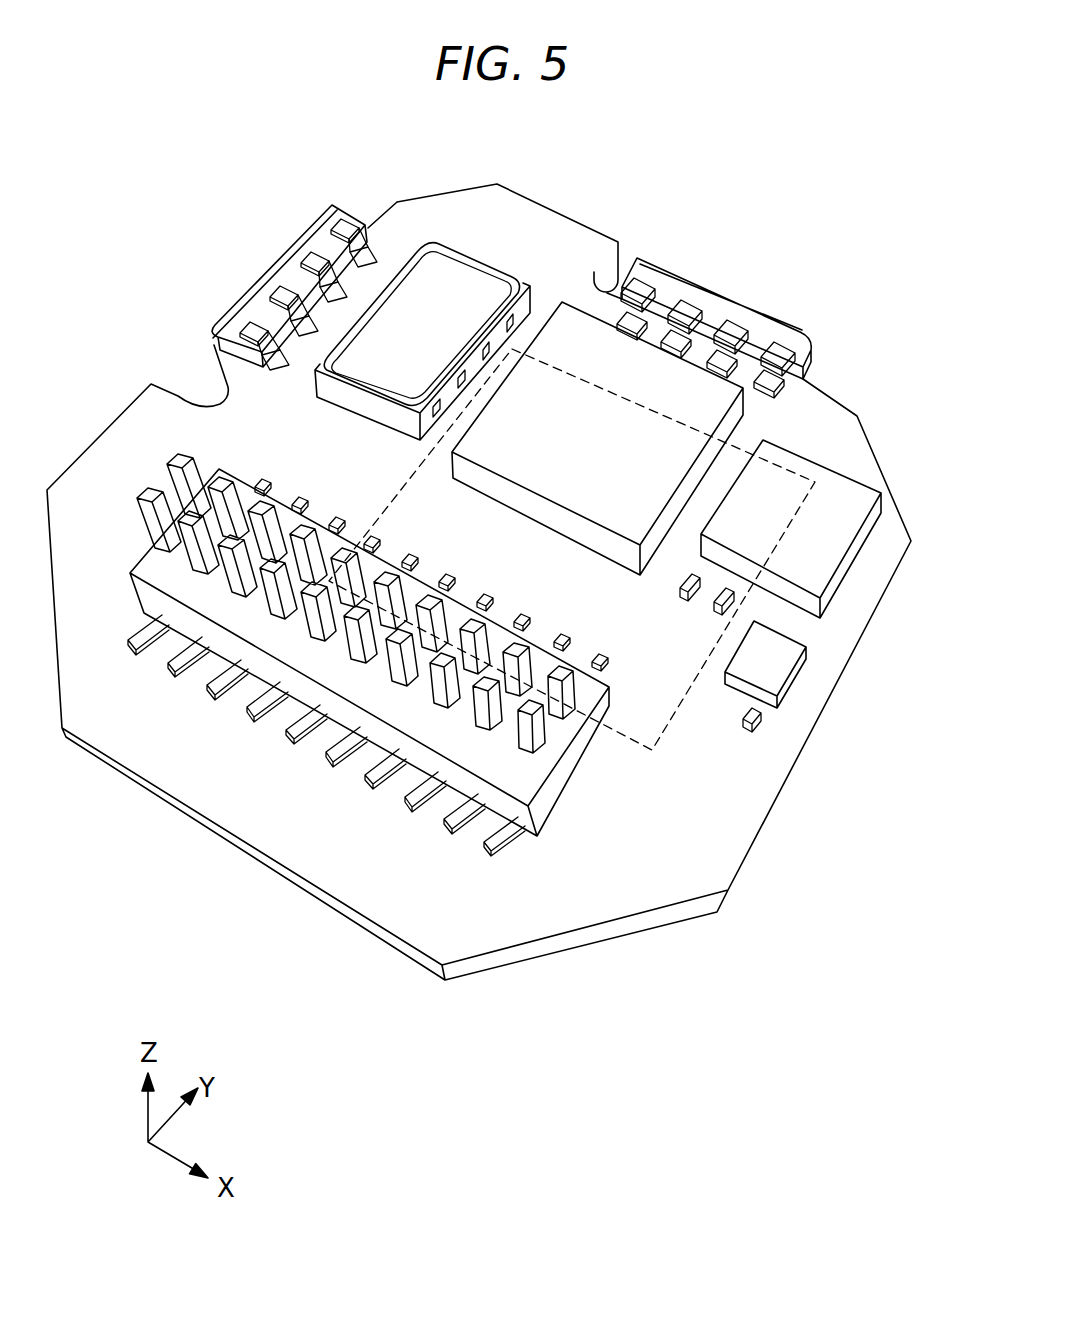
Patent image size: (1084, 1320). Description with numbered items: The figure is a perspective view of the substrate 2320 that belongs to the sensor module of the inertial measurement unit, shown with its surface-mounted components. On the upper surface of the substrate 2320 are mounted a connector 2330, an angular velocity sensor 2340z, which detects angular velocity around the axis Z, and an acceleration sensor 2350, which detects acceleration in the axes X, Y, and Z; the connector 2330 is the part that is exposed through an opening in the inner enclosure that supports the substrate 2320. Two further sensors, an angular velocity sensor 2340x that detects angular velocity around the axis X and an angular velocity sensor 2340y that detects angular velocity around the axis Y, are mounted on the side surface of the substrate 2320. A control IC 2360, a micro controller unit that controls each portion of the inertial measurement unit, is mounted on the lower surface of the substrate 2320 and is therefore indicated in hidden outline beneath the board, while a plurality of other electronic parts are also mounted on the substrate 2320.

The substrate 2320 is at (709, 848).
The connector 2330 is at (527, 776).
The angular velocity sensor 2340x is at (290, 271).
The angular velocity sensor 2340y is at (718, 306).
The angular velocity sensor 2340z is at (458, 260).
The acceleration sensor 2350 is at (702, 407).
The control IC 2360 is at (649, 747).